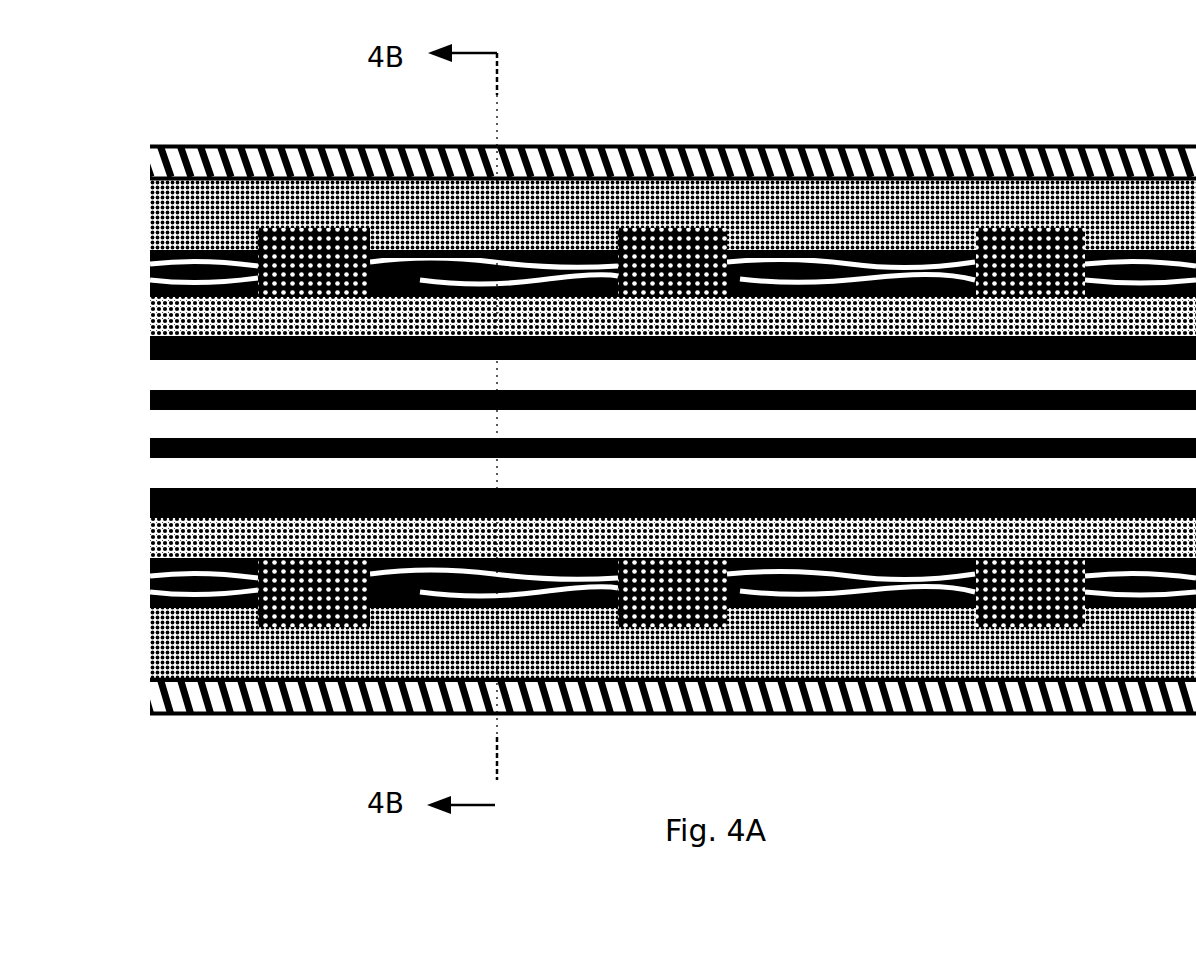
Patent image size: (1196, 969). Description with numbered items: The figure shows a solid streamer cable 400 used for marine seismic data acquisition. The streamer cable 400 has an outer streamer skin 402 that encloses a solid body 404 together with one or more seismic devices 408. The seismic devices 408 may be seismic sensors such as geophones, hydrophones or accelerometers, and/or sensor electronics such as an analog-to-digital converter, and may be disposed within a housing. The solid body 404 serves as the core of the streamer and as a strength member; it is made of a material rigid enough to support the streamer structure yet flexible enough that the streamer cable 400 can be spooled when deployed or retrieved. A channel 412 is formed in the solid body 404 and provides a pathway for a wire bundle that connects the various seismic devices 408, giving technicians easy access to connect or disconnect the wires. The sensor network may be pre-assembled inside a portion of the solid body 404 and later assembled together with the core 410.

The streamer cable 400 is at (668, 367).
The streamer skin 402 is at (732, 146).
The solid body 404 is at (199, 210).
The seismic devices 408 is at (297, 228).
The core 410 is at (872, 277).
The channel 412 is at (584, 250).